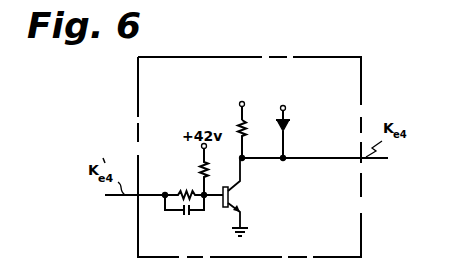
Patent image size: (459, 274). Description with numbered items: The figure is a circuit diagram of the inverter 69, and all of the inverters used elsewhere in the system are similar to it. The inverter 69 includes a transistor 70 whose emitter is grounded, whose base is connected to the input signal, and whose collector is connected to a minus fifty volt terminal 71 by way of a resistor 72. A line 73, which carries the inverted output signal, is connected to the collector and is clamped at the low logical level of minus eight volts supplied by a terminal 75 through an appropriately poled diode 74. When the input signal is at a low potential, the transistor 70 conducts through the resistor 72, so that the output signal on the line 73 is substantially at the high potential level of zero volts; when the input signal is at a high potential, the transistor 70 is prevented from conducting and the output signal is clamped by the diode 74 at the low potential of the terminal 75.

The inverter 69 is at (325, 57).
The transistor 70 is at (237, 201).
The -50 volt terminal 71 is at (238, 104).
The resistor 72 is at (238, 129).
The line 73 is at (262, 159).
The diode 74 is at (290, 125).
The -8 volt terminal 75 is at (286, 109).